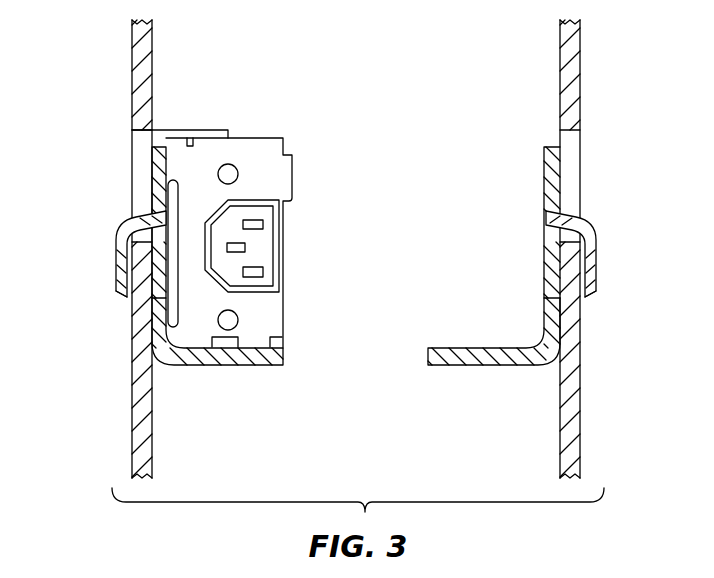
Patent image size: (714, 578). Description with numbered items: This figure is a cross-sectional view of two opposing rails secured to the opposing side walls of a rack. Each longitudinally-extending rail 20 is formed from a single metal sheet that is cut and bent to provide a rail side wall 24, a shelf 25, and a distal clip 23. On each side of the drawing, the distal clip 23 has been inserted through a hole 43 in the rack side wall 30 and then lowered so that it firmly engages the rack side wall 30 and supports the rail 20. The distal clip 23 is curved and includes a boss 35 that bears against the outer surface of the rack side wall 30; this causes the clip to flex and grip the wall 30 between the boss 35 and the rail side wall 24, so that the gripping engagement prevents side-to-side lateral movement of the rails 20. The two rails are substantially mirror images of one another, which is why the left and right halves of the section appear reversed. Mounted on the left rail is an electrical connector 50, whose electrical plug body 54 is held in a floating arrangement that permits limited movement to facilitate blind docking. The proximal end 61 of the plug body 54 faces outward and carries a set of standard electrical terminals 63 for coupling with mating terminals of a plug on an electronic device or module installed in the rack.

The longitudinally-extending rail 20 is at (243, 120).
The distal clip 23 is at (118, 222).
The rail side wall 24 is at (192, 146).
The shelf 25 is at (281, 338).
The rack side wall 30 is at (132, 40).
The boss 35 is at (130, 245).
The hole 43 is at (138, 152).
The electrical connector 50 is at (264, 228).
The electrical plug body 54 is at (260, 201).
The proximal end 61 is at (265, 226).
The contact pins 63 is at (245, 247).